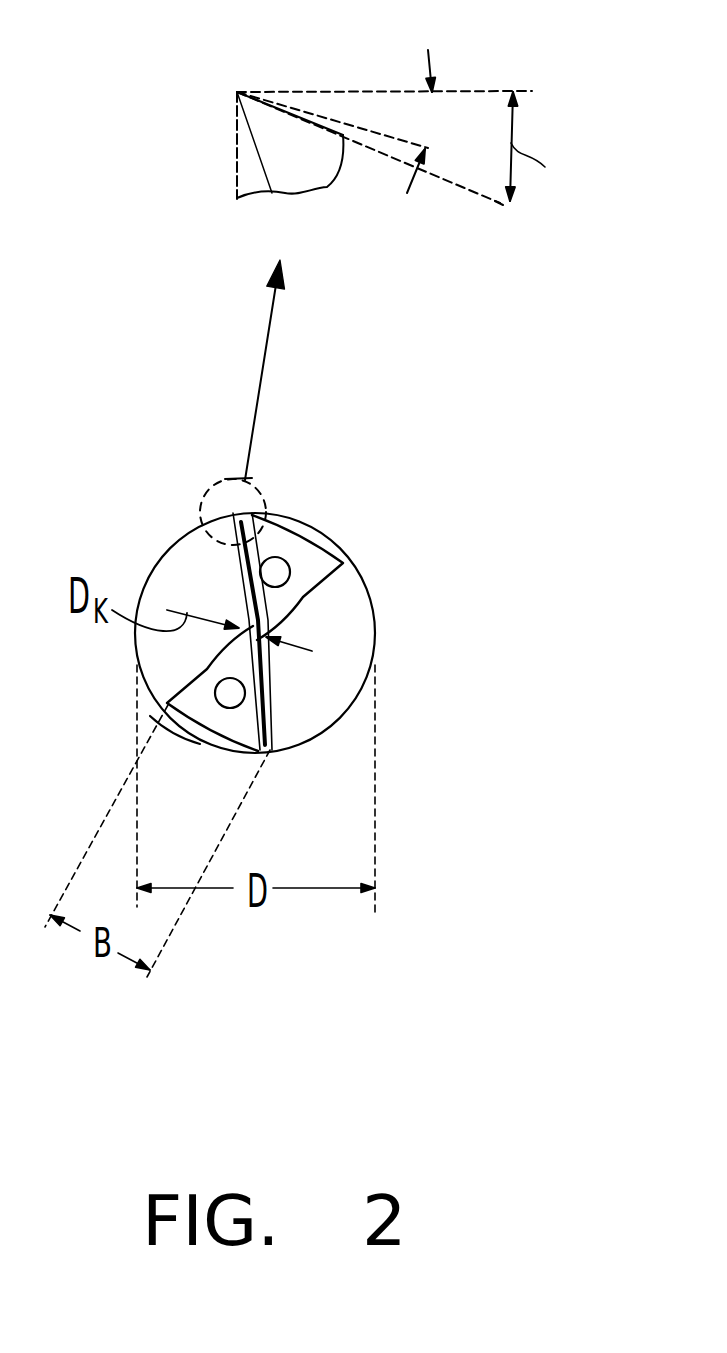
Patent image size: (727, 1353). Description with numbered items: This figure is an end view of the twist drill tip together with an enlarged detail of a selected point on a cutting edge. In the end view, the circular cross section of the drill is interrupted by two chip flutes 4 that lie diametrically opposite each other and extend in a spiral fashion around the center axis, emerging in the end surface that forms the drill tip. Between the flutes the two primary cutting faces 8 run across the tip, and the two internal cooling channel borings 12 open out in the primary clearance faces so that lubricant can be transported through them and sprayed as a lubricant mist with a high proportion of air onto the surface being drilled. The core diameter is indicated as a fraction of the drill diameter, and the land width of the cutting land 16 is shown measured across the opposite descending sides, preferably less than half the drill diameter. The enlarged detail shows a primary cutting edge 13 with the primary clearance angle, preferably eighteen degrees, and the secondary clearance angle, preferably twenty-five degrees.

The chip flute 4 is at (303, 597).
The primary cutting face 8 is at (228, 543).
The cooling channel boring 12 is at (275, 572).
The primary cutting edge 13 is at (238, 92).
The cutting land 16 is at (180, 729).